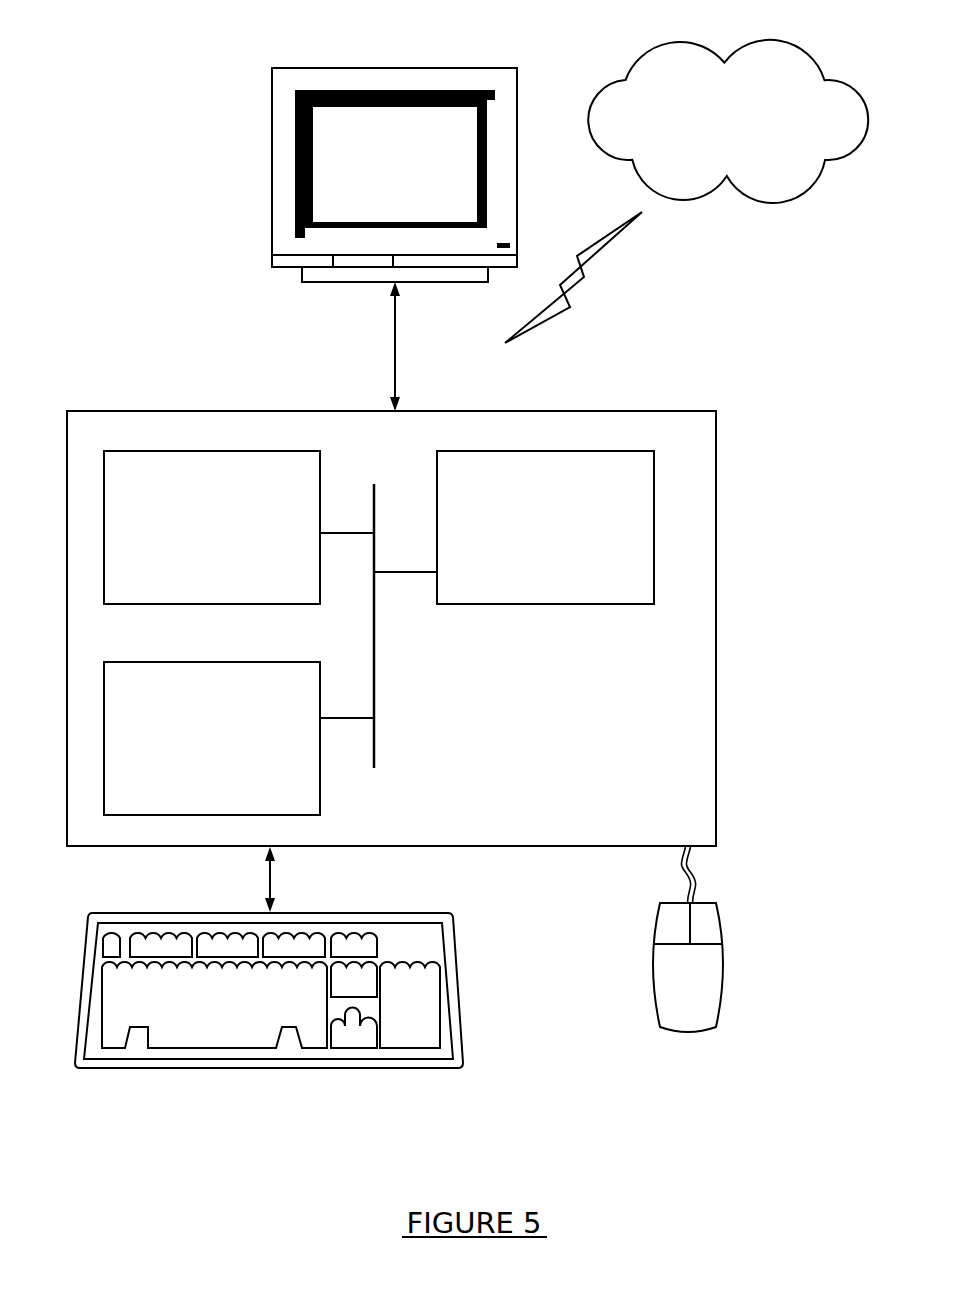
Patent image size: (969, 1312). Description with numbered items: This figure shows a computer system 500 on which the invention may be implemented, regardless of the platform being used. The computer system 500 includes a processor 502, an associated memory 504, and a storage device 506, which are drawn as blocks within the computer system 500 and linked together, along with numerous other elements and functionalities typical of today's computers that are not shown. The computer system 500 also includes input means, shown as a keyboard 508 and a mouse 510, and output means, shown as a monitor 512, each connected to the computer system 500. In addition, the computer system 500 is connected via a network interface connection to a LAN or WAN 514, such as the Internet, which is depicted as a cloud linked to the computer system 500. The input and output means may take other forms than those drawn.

The computer system 500 is at (745, 643).
The processor 502 is at (523, 544).
The memory 504 is at (189, 542).
The storage device 506 is at (187, 750).
The keyboard 508 is at (182, 1027).
The mouse 510 is at (666, 986).
The monitor 512 is at (373, 182).
The LAN or WAN 514 is at (698, 142).